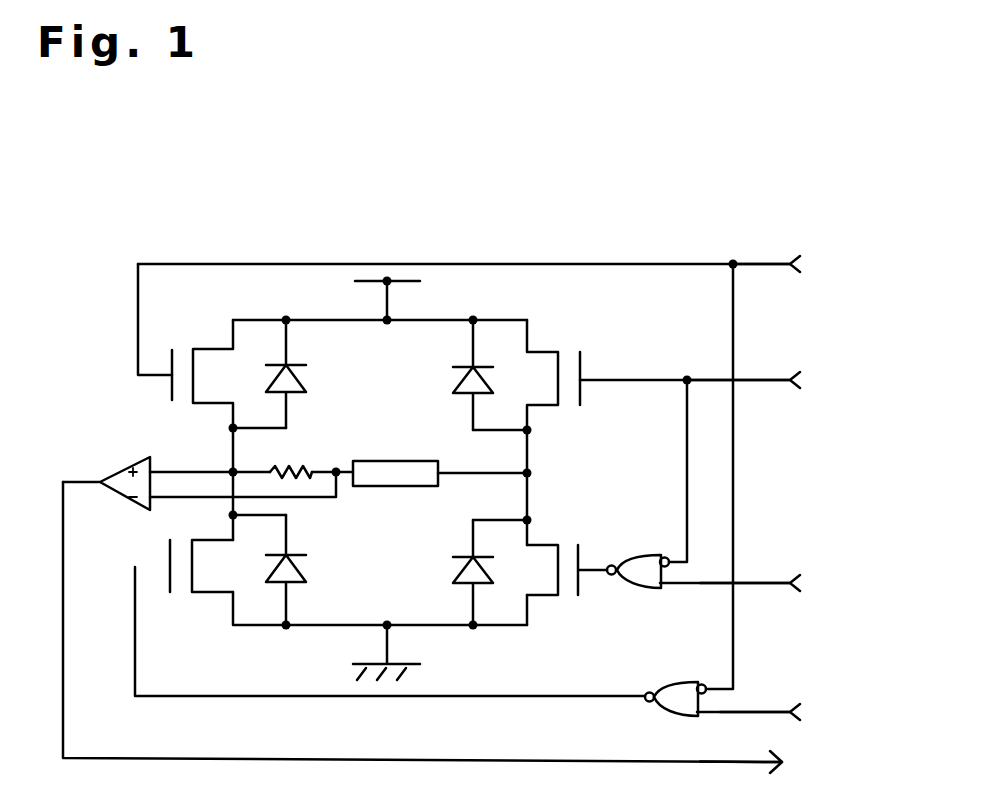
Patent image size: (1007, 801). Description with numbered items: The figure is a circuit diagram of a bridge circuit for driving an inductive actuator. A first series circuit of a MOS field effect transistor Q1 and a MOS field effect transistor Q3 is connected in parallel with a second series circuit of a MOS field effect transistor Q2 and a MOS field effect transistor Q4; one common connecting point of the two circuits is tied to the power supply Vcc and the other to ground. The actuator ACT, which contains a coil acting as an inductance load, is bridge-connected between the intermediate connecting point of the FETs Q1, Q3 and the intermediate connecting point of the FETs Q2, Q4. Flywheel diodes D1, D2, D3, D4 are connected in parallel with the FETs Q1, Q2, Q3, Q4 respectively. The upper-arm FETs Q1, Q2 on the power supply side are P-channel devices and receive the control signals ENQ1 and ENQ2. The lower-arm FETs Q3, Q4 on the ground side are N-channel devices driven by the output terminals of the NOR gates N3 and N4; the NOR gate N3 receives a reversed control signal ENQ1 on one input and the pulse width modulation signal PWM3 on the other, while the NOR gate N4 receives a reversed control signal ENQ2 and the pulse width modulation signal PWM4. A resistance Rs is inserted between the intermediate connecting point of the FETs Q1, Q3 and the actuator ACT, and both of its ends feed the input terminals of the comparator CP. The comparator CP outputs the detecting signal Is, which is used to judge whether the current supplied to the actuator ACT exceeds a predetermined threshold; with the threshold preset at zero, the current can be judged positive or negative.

The MOS field effect transistor Q1 is at (192, 372).
The MOS field effect transistor Q2 is at (560, 373).
The MOS field effect transistor Q3 is at (194, 589).
The MOS field effect transistor Q4 is at (567, 594).
The flywheel diode D1 is at (309, 374).
The flywheel diode D2 is at (451, 375).
The flywheel diode D3 is at (309, 570).
The flywheel diode D4 is at (446, 572).
The resistance Rs is at (299, 466).
The actuator ACT is at (388, 488).
The comparator CP is at (106, 472).
The NOR gate N3 is at (674, 684).
The NOR gate N4 is at (638, 555).
The power supply Vcc is at (419, 298).
The control signal ENQ1 is at (813, 268).
The control signal ENQ2 is at (787, 383).
The pulse width modulation signal PWM3 is at (807, 717).
The pulse width modulation signal PWM4 is at (800, 587).
The detecting signal Is is at (763, 767).